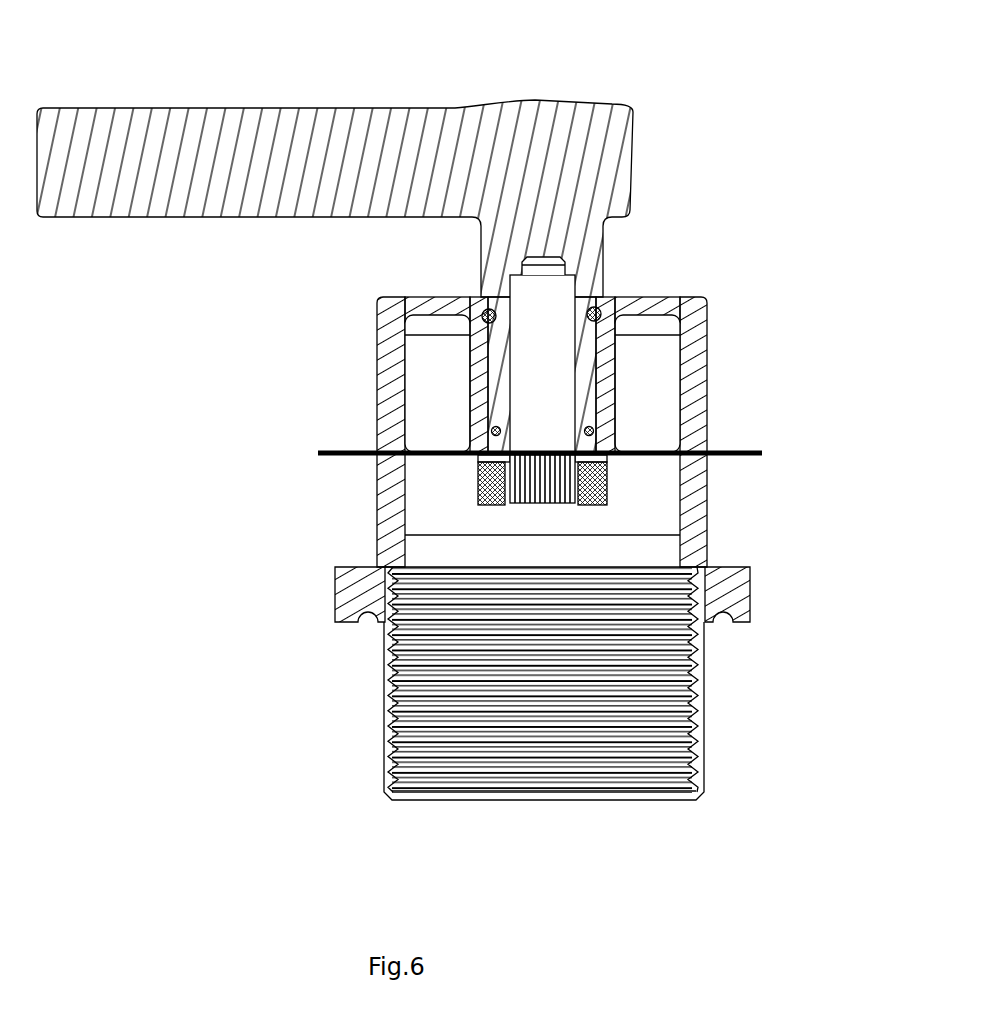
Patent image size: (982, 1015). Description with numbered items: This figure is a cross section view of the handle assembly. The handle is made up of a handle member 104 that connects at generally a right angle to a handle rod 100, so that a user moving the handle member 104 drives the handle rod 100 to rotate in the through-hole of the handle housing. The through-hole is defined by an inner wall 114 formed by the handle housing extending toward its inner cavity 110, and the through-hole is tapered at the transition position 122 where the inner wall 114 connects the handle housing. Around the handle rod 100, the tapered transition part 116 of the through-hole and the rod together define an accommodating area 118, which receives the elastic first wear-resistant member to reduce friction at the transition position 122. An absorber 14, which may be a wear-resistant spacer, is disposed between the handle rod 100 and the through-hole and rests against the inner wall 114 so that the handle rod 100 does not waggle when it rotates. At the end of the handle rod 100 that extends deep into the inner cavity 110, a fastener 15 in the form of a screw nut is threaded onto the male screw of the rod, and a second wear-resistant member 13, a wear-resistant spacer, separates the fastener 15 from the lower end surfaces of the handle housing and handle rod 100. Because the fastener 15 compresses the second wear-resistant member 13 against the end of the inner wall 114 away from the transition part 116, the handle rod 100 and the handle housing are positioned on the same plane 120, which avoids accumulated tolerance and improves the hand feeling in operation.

The handle member 104 is at (165, 133).
The handle rod 100 is at (602, 268).
The accommodating area 118 is at (485, 312).
The transition position 122 is at (600, 310).
The transition part 116 is at (602, 320).
The absorber 14 is at (594, 430).
The plane 120 is at (741, 449).
The inner cavity 110 is at (653, 428).
The inner wall 114 is at (482, 402).
The fastener 15 is at (480, 493).
The second wear-resistant member 13 is at (612, 455).